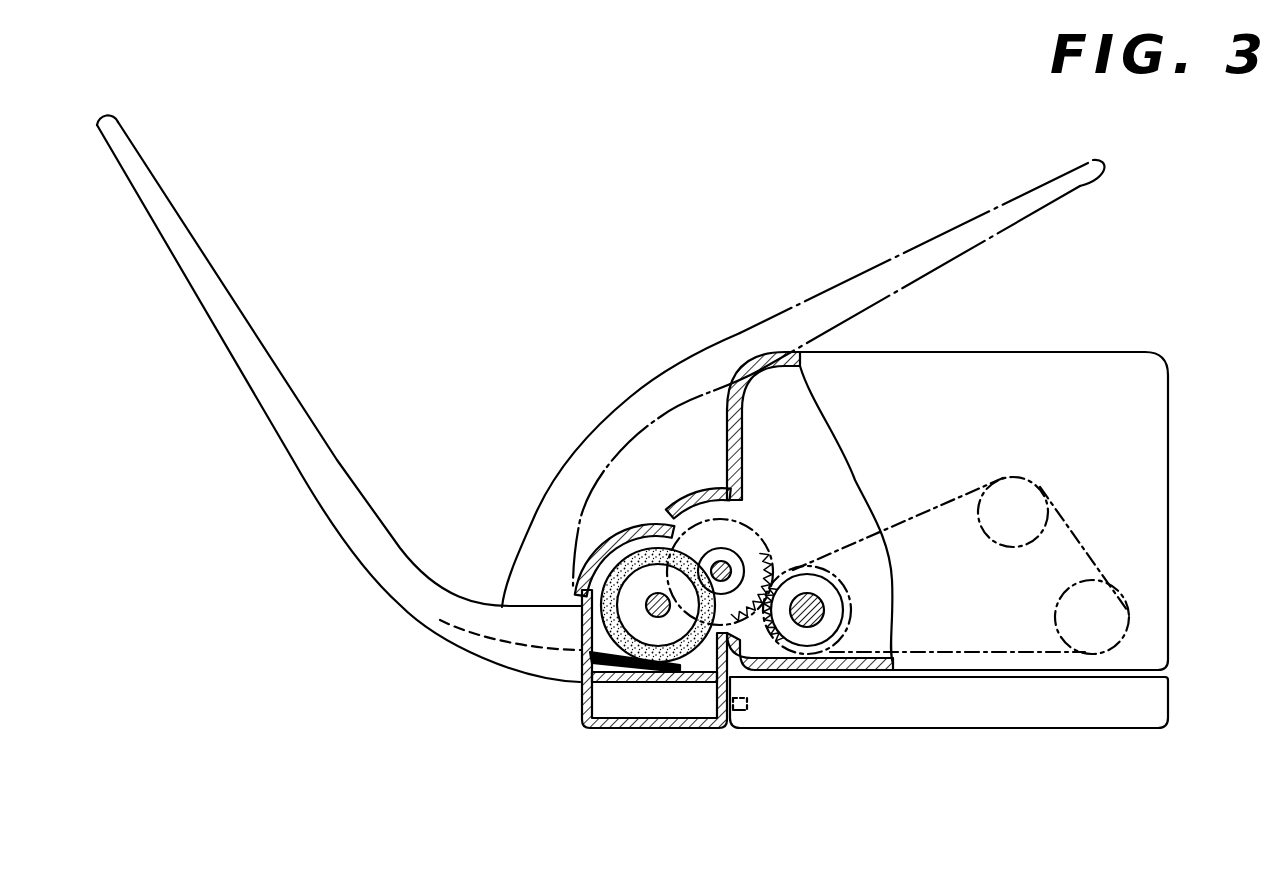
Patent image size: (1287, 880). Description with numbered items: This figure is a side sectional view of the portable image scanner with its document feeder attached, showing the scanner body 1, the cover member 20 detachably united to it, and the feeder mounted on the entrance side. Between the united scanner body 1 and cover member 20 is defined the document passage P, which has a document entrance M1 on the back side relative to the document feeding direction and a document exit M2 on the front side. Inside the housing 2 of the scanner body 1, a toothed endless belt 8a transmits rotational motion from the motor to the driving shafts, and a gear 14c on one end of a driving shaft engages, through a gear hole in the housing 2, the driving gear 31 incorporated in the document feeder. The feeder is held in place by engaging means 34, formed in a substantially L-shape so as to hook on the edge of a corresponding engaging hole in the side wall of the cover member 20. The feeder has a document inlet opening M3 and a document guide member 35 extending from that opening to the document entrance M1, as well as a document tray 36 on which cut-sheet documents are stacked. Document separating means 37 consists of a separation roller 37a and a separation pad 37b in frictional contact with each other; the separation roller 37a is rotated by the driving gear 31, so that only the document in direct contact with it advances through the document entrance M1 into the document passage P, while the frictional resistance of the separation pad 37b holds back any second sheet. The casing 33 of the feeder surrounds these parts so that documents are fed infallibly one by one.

The scanner body 1 is at (1090, 334).
The housing 2 is at (1145, 409).
The toothed endless belt 8a is at (1077, 533).
The gear 14c is at (805, 585).
The cover member 20 is at (1117, 718).
The driving gear 31 is at (697, 517).
The casing 33 is at (637, 527).
The engaging means 34 is at (742, 727).
The document guide member 35 is at (653, 678).
The document tray 36 is at (279, 383).
The document separating means 37 is at (501, 412).
The separation roller 37a is at (600, 570).
The separation pad 37b is at (585, 597).
The document entrance M1 is at (740, 665).
The document exit M2 is at (1173, 672).
The document inlet opening M3 is at (580, 635).
The document passage P is at (990, 675).